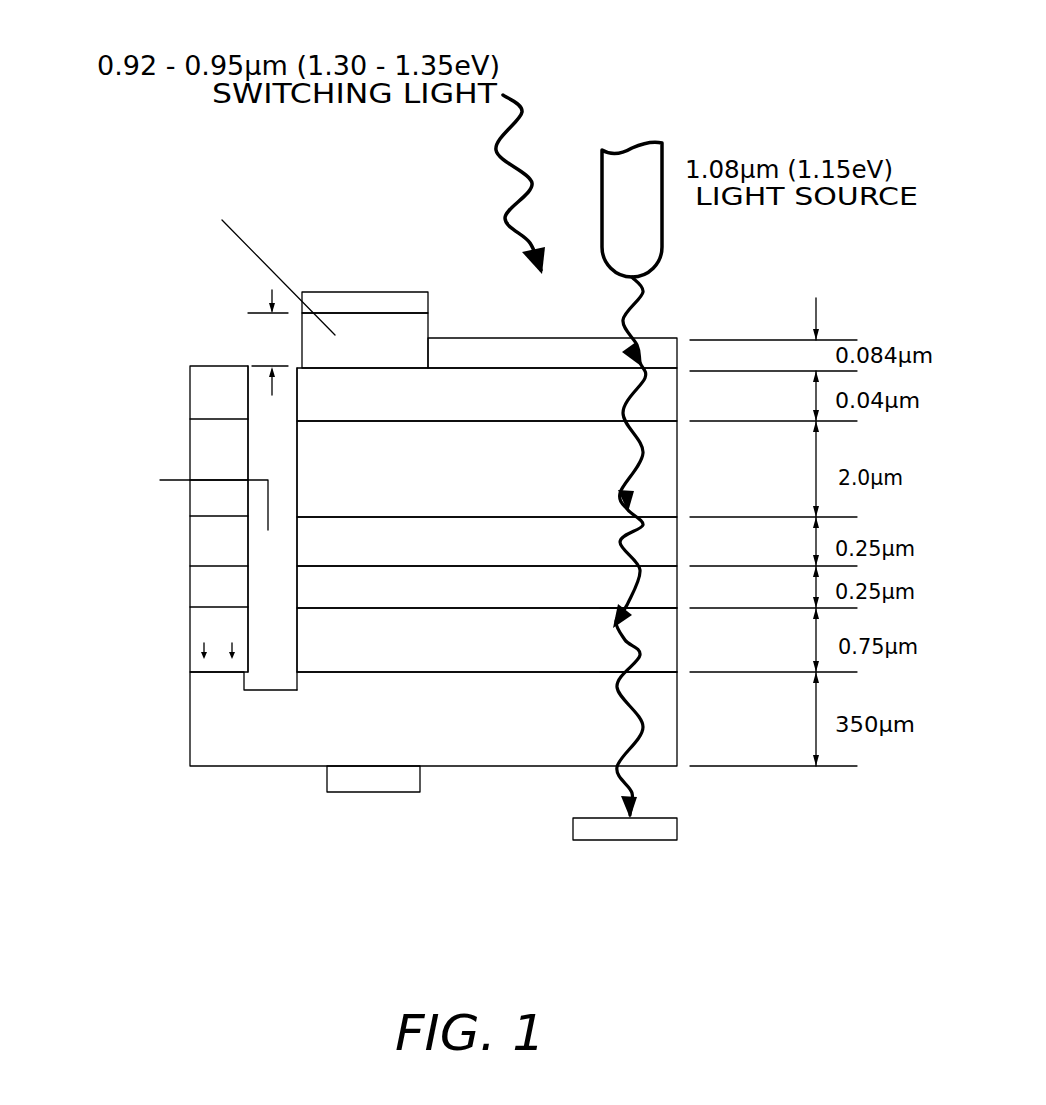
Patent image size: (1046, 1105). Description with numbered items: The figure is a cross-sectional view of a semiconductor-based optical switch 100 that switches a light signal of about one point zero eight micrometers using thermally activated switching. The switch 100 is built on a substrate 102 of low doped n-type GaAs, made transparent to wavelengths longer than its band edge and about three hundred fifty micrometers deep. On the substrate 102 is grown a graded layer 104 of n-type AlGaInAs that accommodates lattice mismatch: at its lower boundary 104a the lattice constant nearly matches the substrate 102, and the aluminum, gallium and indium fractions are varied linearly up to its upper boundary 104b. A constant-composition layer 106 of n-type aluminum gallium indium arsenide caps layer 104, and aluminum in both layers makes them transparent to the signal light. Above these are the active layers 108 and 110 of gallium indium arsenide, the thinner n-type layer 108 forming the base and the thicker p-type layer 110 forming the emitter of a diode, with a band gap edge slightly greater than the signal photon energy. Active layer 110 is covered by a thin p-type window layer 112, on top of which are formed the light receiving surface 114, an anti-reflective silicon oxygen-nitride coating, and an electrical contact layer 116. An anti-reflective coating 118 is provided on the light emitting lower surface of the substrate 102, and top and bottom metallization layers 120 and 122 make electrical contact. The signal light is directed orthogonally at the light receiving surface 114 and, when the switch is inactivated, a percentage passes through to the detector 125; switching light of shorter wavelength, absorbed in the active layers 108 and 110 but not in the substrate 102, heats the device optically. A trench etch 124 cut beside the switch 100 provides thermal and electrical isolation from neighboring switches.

The optical switch 100 is at (566, 61).
The substrate 102 is at (212, 741).
The layer of n-type AlGaInAs 104 is at (655, 653).
The lower boundary 104a is at (650, 668).
The upper boundary 104b is at (645, 608).
The layer of n-type Al0.1Ga0.7In0.2As 106 is at (659, 589).
The active layer 108 is at (659, 543).
The active layer 110 is at (657, 471).
The window layer 112 is at (657, 395).
The light receiving surface 114 is at (663, 352).
The electrical contact layer 116 is at (387, 358).
The anti-reflective coating 118 is at (568, 774).
The top metallization layer 120 is at (413, 302).
The bottom metallization layer 122 is at (332, 777).
The trench etch 124 is at (258, 683).
The detector 125 is at (656, 838).